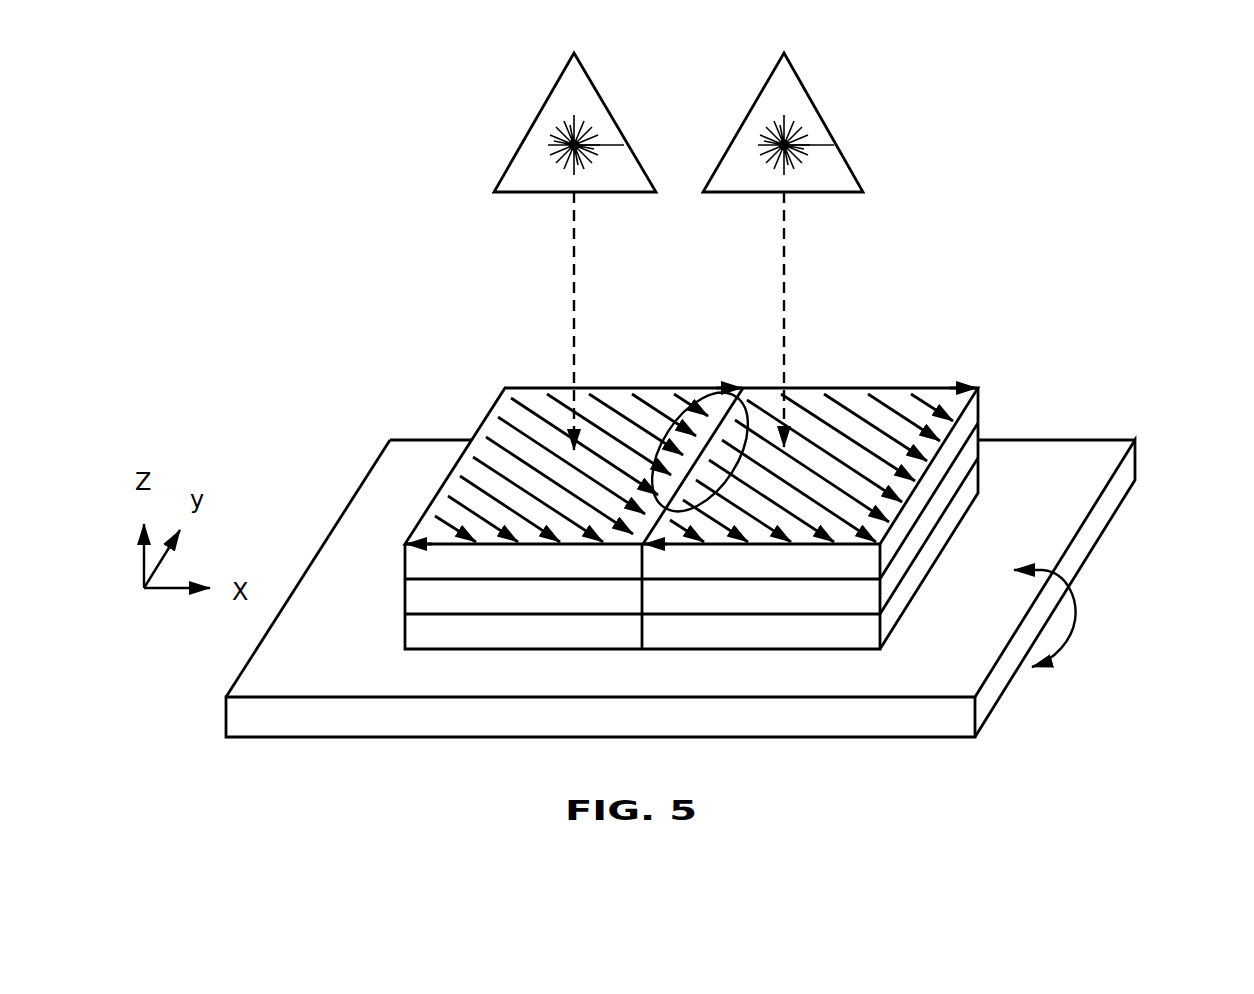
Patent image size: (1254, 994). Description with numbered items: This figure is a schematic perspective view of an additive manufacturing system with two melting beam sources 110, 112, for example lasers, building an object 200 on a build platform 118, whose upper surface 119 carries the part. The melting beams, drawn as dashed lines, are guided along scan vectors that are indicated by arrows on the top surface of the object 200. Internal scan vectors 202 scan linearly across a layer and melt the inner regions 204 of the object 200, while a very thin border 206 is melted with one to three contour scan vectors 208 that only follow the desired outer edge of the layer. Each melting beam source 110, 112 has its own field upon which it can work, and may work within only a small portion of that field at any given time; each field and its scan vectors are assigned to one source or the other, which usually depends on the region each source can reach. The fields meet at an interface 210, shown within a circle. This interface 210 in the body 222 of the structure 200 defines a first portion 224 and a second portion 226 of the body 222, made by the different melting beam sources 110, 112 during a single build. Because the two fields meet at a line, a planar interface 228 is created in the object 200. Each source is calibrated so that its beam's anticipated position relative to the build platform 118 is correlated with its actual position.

The melting beam source 110 is at (535, 120).
The melting beam source 112 is at (822, 118).
The build platform 118 is at (1083, 540).
The top surface of substrate 119 is at (1110, 448).
The object 200 is at (1002, 502).
The internal scan vectors 202 is at (641, 400).
The inner regions 204 is at (555, 466).
The border 206 is at (545, 400).
The contour scan vectors 208 is at (482, 425).
The interface 210 is at (760, 393).
The body 222 is at (807, 398).
The first portion 224 is at (533, 537).
The second portion 226 is at (767, 533).
The planar interface 228 is at (642, 600).